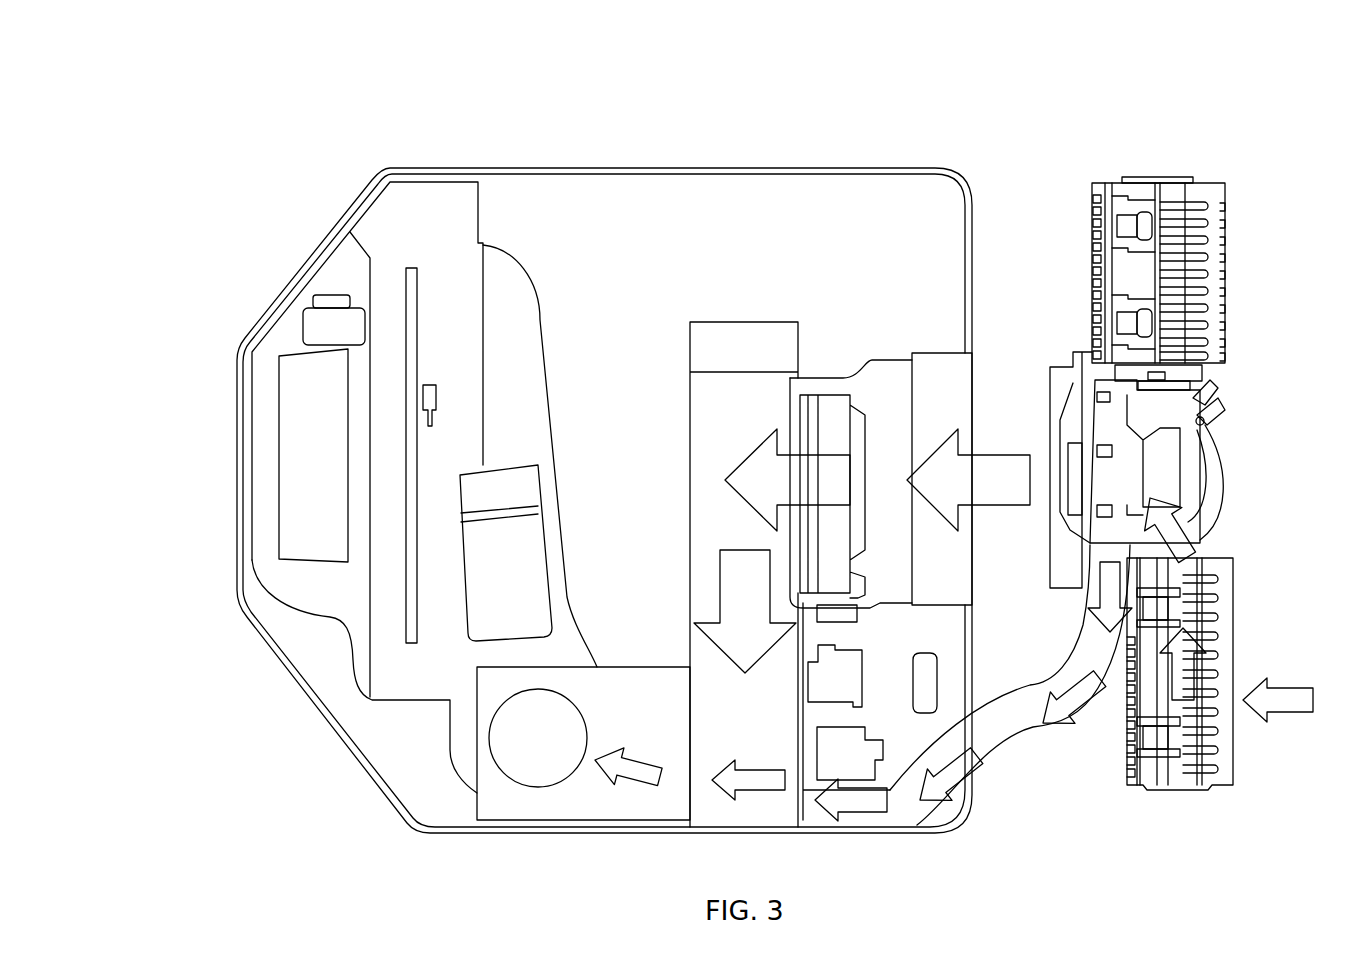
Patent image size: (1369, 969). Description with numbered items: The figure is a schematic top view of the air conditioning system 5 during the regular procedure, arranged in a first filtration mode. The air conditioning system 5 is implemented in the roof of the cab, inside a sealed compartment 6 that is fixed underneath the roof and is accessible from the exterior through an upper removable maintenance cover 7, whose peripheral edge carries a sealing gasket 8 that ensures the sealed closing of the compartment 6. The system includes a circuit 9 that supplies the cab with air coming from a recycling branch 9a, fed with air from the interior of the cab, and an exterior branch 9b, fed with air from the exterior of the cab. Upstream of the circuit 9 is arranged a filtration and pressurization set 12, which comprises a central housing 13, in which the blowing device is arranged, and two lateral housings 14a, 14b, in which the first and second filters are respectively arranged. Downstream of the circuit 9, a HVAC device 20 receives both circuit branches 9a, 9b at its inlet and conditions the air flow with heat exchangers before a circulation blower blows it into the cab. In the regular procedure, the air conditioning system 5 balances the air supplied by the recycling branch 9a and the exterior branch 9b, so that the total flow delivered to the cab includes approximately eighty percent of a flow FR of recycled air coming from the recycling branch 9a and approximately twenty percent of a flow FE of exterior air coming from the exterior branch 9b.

The air conditioning system 5 is at (738, 464).
The sealed compartment 6 is at (738, 464).
The upper removable maintenance cover 7 is at (542, 213).
The sealing gasket 8 is at (610, 167).
The circuit 9 is at (923, 427).
The recycling branch 9a is at (902, 367).
The exterior branch 9b is at (998, 725).
The filtration and pressurization set 12 is at (1197, 470).
The central housing 13 is at (1173, 467).
The lateral housing 14a is at (1220, 768).
The lateral housing 14b is at (1193, 262).
The HVAC device 20 is at (262, 513).
The flow of recycled air FR is at (763, 470).
The flow of exterior air FE is at (860, 813).